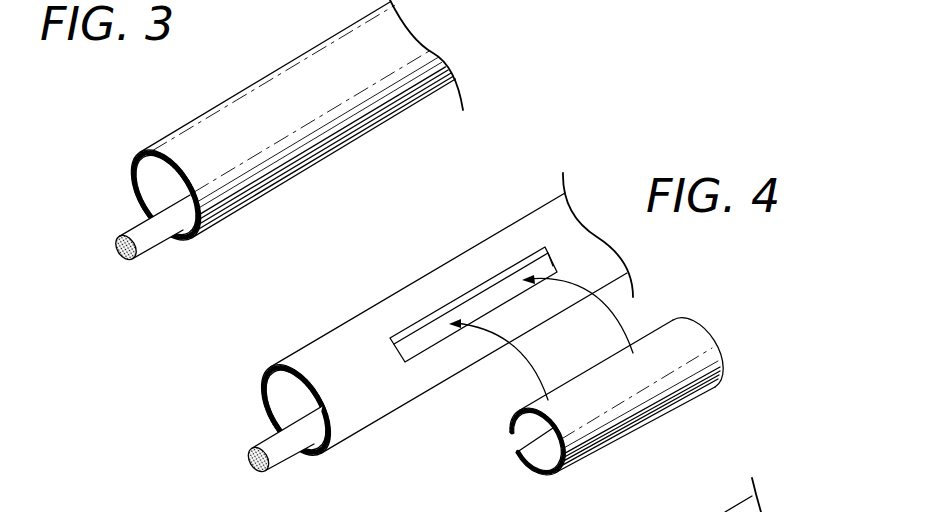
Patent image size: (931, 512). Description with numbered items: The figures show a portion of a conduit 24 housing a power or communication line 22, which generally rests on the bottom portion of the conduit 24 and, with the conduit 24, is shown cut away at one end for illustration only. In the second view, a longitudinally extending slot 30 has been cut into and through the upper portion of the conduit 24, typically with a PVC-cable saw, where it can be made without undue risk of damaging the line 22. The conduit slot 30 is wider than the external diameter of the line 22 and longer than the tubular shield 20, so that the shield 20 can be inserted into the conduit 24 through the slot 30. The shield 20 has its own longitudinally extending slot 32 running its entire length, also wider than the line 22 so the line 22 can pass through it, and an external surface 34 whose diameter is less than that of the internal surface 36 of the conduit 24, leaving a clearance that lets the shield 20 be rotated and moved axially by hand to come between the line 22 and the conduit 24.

In FIG. 4, the shield 20 is at (633, 382).
In FIG. 3, the power or communication line 22 is at (150, 238).
In FIG. 4, the power or communication line 22 is at (280, 450).
In FIG. 3, the conduit 24 is at (286, 82).
In FIG. 4, the conduit 24 is at (357, 407).
In FIG. 4, the slot 30 is at (506, 289).
In FIG. 4, the shield slot 32 is at (511, 441).
In FIG. 4, the external surface 34 is at (706, 362).
In FIG. 3, the internal surface 36 is at (147, 183).
In FIG. 4, the internal surface 36 is at (283, 398).